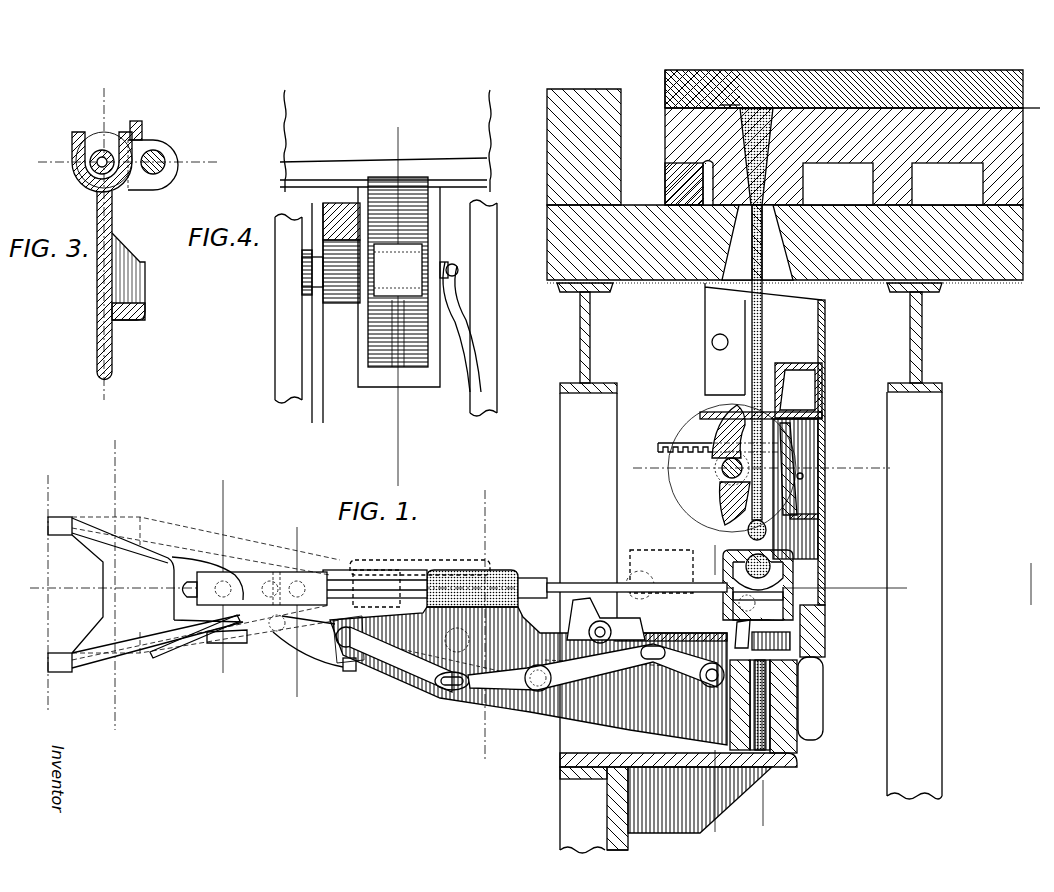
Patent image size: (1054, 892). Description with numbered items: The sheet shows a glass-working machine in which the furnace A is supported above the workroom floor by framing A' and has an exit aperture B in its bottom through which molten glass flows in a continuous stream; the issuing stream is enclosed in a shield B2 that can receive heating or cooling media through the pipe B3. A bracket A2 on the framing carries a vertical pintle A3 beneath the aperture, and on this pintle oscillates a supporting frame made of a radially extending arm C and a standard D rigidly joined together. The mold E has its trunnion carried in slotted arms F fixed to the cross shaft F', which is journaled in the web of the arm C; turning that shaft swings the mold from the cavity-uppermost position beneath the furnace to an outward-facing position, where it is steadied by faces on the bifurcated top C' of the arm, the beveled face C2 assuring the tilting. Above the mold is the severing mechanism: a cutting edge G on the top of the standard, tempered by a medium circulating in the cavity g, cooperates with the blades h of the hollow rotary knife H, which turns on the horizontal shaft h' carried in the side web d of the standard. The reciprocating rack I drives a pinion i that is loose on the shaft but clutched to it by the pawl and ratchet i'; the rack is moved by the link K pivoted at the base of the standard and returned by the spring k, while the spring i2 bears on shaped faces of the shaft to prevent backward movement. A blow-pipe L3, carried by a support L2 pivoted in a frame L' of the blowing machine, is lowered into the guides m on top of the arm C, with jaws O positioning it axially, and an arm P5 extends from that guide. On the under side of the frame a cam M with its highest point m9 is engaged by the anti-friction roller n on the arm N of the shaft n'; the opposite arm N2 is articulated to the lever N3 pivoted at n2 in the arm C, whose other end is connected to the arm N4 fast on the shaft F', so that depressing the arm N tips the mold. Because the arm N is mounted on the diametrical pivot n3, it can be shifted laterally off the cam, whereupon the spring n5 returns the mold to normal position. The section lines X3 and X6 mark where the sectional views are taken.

In FIG. 1, the furnace A is at (793, 181).
In FIG. 1, the framing A' is at (733, 571).
In FIG. 1, the bracket A2 is at (720, 783).
In FIG. 1, the vertical pintle A3 is at (797, 745).
In FIG. 1, the exit aperture B is at (740, 138).
In FIG. 1, the shield B2 is at (795, 333).
In FIG. 1, the pipe B3 is at (712, 342).
In FIG. 3, the radially extending arm C is at (104, 285).
In FIG. 1, the radially extending arm C is at (528, 686).
In FIG. 1, the bifurcated top C' is at (659, 558).
In FIG. 1, the beveled inner end of face C2 is at (790, 608).
In FIG. 1, the standard D is at (828, 540).
In FIG. 1, the mold E is at (783, 565).
In FIG. 1, the arms F is at (791, 632).
In FIG. 1, the cross shaft F' is at (804, 705).
In FIG. 4, the cutting edge G is at (318, 176).
In FIG. 1, the cutting edge G is at (782, 411).
In FIG. 1, the cavity g is at (805, 393).
In FIG. 4, the rotary knife H is at (400, 330).
In FIG. 1, the rotary knife H is at (708, 433).
In FIG. 4, the blades h is at (411, 264).
In FIG. 1, the blades h is at (710, 453).
In FIG. 4, the horizontal shaft h' is at (452, 242).
In FIG. 1, the horizontal shaft h' is at (692, 476).
In FIG. 4, the reciprocating rack I is at (335, 225).
In FIG. 1, the reciprocating rack I is at (672, 446).
In FIG. 4, the pinion i is at (341, 285).
In FIG. 4, the pawl and ratchet i' is at (284, 272).
In FIG. 4, the spring i2 is at (452, 300).
In FIG. 4, the link K is at (312, 338).
In FIG. 1, the link K is at (800, 512).
In FIG. 1, the spring k is at (805, 477).
In FIG. 4, the side web d is at (285, 364).
In FIG. 1, the side web d is at (808, 468).
In FIG. 1, the blow-pipe frame L' is at (194, 581).
In FIG. 3, the blow-pipe support L2 is at (97, 140).
In FIG. 1, the blow-pipe support L2 is at (243, 582).
In FIG. 3, the blow-pipe L3 is at (107, 150).
In FIG. 1, the blow-pipe L3 is at (365, 588).
In FIG. 1, the cam M is at (219, 634).
In FIG. 3, the guides m is at (138, 143).
In FIG. 1, the guides m is at (490, 588).
In FIG. 1, the highest point of cam m9 is at (200, 645).
In FIG. 1, the arm N is at (320, 648).
In FIG. 1, the anti-friction roller n is at (272, 638).
In FIG. 1, the shaft n' is at (332, 670).
In FIG. 1, the oppositely extending arm N2 is at (410, 667).
In FIG. 1, the pivot n2 is at (538, 692).
In FIG. 1, the lever N3 is at (500, 692).
In FIG. 1, the diametrical pivot n3 is at (350, 654).
In FIG. 1, the arm N4 is at (800, 660).
In FIG. 1, the spring n5 is at (772, 637).
In FIG. 1, the jaws O is at (600, 624).
In FIG. 3, the arm P5 is at (146, 133).
In FIG. 1, the section line X3 is at (485, 622).
In FIG. 1, the section line X6 is at (731, 690).